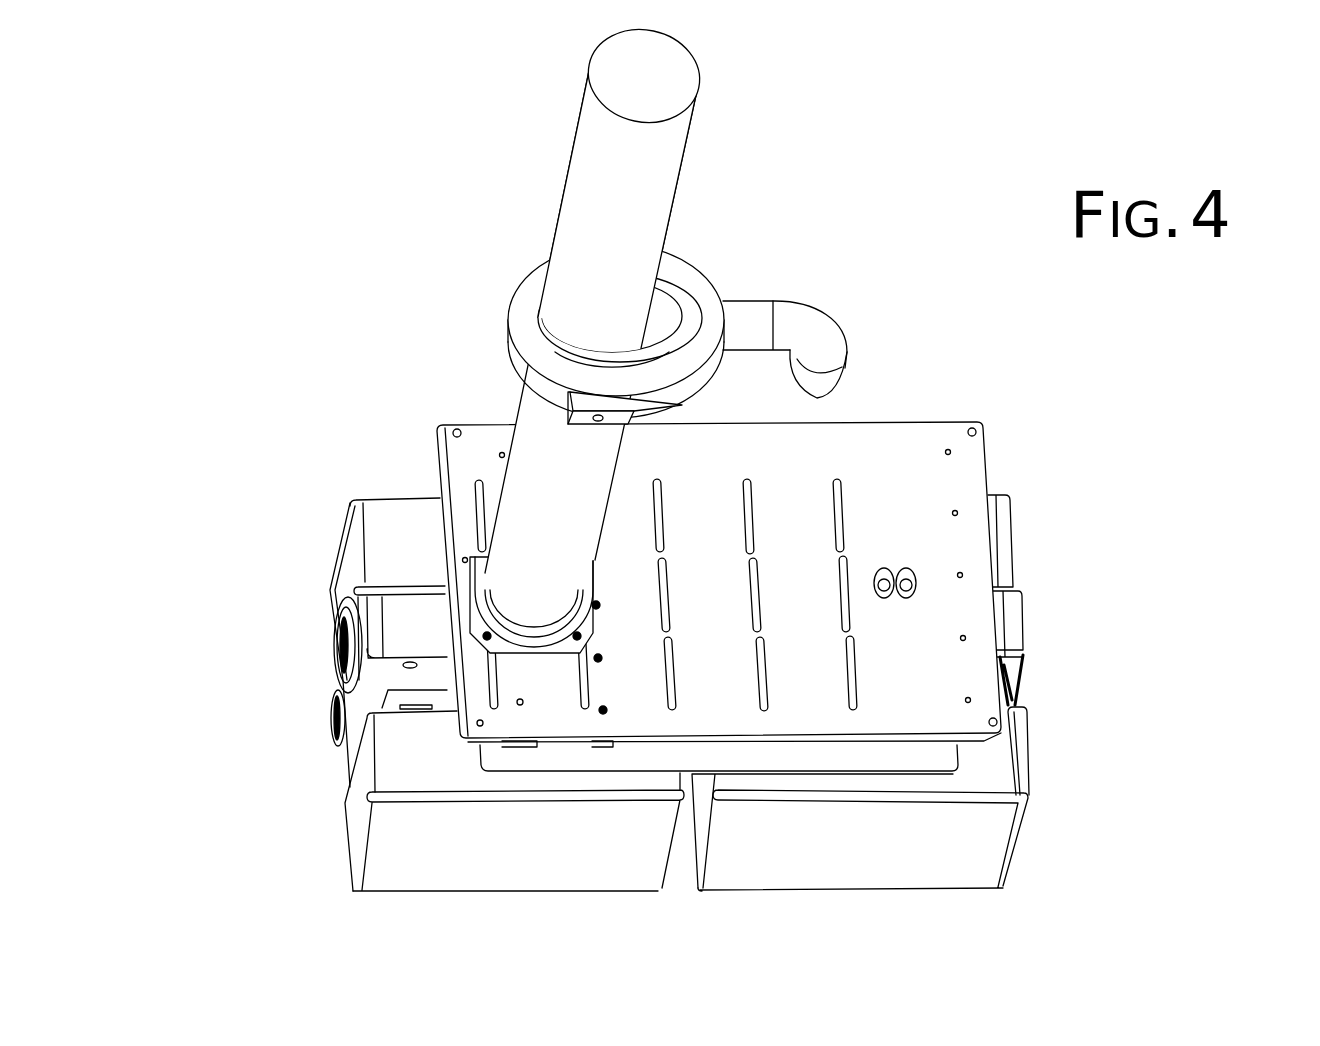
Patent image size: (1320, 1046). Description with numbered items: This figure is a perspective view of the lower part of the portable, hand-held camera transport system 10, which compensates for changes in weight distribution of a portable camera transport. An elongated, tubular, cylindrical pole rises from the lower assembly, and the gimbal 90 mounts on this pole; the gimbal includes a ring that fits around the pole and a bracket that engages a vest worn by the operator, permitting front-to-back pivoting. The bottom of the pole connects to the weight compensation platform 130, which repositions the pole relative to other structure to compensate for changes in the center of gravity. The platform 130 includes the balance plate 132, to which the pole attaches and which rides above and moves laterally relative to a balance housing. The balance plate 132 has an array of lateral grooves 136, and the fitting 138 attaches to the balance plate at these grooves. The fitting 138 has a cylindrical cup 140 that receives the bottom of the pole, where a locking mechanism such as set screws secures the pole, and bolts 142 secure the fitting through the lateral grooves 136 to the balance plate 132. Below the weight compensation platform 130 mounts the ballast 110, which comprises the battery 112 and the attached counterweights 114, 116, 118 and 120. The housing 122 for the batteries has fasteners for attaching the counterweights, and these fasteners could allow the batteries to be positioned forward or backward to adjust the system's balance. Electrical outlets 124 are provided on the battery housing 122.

The hand-held transport system 10 is at (305, 410).
The gimbal 90 is at (708, 238).
The ballast 110 is at (303, 578).
The battery 112 is at (400, 637).
The counterweight 114 is at (378, 520).
The counterweight 116 is at (1007, 540).
The counterweight 118 is at (1007, 776).
The counterweight 120 is at (397, 857).
The housing 122 is at (1015, 622).
The electrical outlets 124 is at (333, 697).
The weight compensation platform 130 is at (1013, 456).
The balance plate 132 is at (915, 437).
The lateral grooves 136 is at (838, 481).
The fitting 138 is at (590, 623).
The cylindrical cup 140 is at (593, 583).
The bolts 142 is at (590, 633).